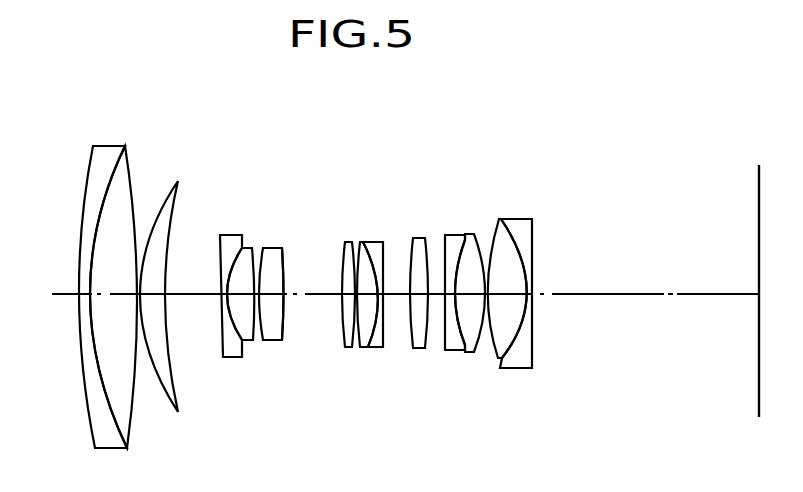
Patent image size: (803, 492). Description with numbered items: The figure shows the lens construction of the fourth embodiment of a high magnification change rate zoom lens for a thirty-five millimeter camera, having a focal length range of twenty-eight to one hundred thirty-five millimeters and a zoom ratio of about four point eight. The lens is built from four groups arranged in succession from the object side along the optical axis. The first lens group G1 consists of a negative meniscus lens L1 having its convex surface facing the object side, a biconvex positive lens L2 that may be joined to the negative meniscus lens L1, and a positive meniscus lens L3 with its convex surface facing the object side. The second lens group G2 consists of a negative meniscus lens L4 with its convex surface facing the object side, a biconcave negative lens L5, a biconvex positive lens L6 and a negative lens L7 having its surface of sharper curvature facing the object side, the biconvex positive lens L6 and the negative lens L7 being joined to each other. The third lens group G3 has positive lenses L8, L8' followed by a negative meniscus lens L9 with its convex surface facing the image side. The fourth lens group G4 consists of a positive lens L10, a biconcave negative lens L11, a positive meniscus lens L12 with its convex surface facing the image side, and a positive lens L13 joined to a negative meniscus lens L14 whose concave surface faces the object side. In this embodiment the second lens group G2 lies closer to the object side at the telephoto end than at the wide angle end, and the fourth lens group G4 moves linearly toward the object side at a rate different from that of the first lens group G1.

The first lens group G1 is at (188, 89).
The second lens group G2 is at (308, 174).
The third lens group G3 is at (402, 174).
The fourth lens group G4 is at (580, 174).
The negative meniscus lens L1 is at (104, 149).
The biconvex positive lens L2 is at (128, 154).
The positive meniscus lens L3 is at (169, 182).
The negative meniscus lens L4 is at (228, 236).
The biconcave negative lens L5 is at (250, 247).
The biconvex positive lens L6 is at (265, 247).
The negative lens L7 is at (279, 248).
The positive lens L8 is at (333, 265).
The positive lens L8' is at (358, 265).
The negative meniscus lens L9 is at (374, 246).
The positive lens L10 is at (420, 242).
The biconcave negative lens L11 is at (458, 238).
The positive meniscus lens L12 is at (466, 236).
The positive lens L13 is at (496, 236).
The negative meniscus lens L14 is at (518, 228).